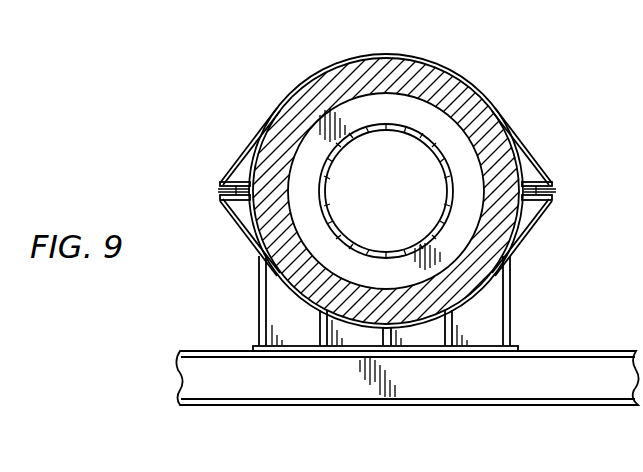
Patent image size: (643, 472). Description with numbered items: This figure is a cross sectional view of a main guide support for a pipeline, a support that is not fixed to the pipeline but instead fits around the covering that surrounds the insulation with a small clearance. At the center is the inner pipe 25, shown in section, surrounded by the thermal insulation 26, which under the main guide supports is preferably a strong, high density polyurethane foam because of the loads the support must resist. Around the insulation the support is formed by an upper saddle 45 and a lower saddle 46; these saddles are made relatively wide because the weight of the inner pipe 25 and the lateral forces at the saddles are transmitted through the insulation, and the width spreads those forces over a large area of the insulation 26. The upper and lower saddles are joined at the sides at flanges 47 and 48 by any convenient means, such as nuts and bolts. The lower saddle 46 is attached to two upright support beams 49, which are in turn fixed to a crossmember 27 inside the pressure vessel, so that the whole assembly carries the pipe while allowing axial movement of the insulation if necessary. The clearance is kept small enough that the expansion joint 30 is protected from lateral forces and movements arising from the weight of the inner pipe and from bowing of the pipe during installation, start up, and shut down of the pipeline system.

The inner pipe 25 is at (443, 175).
The thermal insulation 26 is at (288, 127).
The crossmember 27 is at (569, 366).
The expansion joint 30 is at (425, 116).
The upper saddle 45 is at (310, 78).
The lower saddle 46 is at (497, 278).
The flange 47 is at (233, 184).
The flange 48 is at (233, 200).
The upright support beam 49 is at (275, 316).